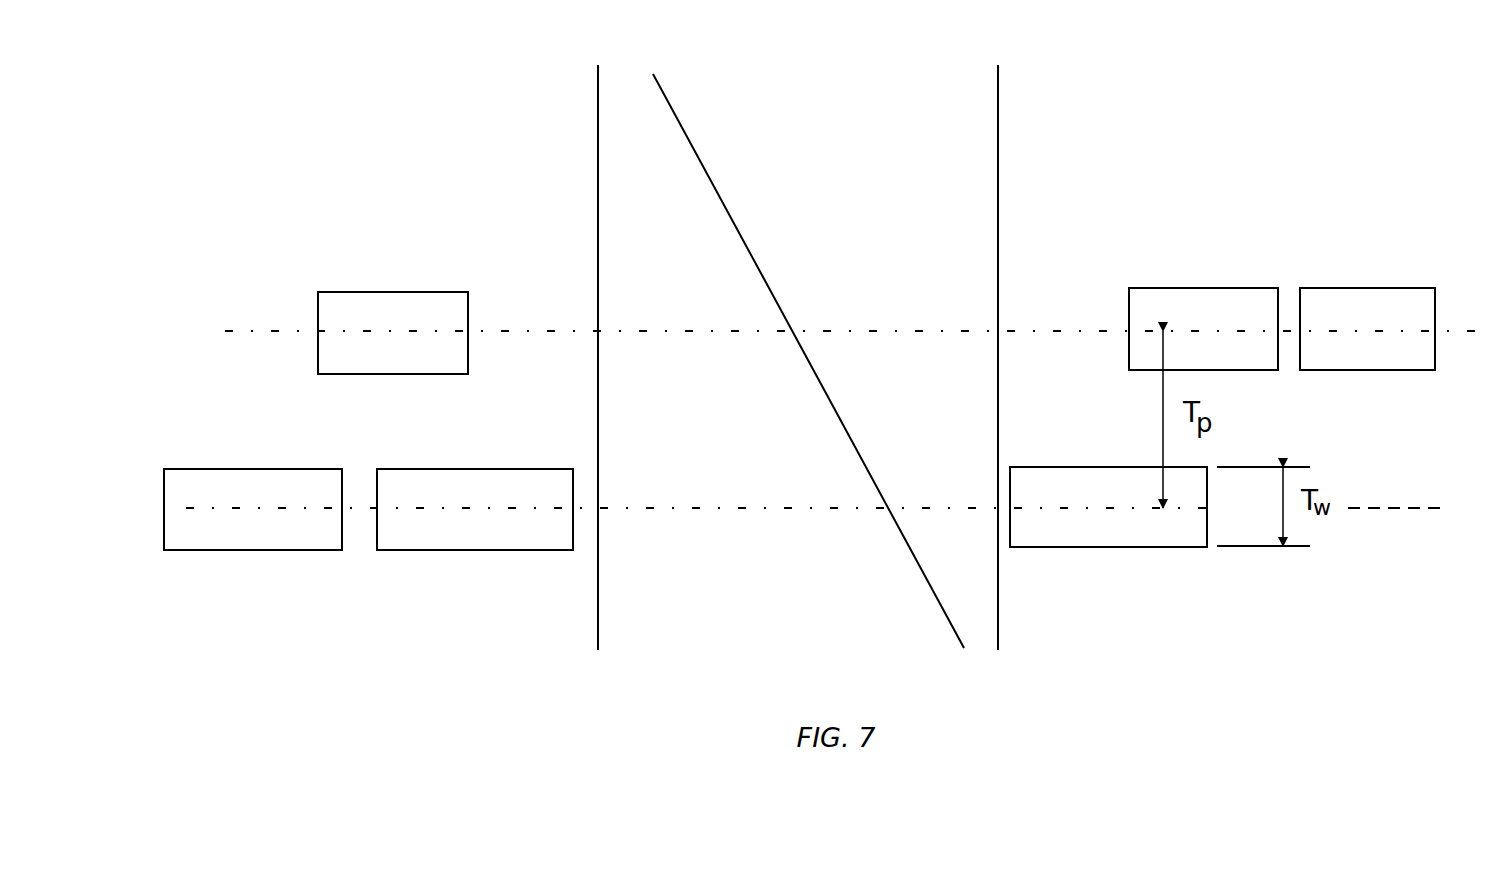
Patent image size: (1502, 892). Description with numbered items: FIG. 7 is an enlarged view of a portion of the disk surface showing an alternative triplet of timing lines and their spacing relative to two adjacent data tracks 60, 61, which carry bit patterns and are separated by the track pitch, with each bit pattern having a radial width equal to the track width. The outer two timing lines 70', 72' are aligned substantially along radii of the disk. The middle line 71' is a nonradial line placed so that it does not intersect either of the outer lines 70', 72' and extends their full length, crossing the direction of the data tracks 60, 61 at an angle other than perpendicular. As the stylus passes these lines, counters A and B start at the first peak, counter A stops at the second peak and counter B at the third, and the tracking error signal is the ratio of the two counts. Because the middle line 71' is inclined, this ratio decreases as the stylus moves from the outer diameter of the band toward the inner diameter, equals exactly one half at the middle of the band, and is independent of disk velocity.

The data track 60 is at (274, 331).
The data track 61 is at (352, 508).
The outer timing line 70' is at (562, 357).
The middle timing line 71' is at (808, 361).
The outer timing line 72' is at (1047, 356).